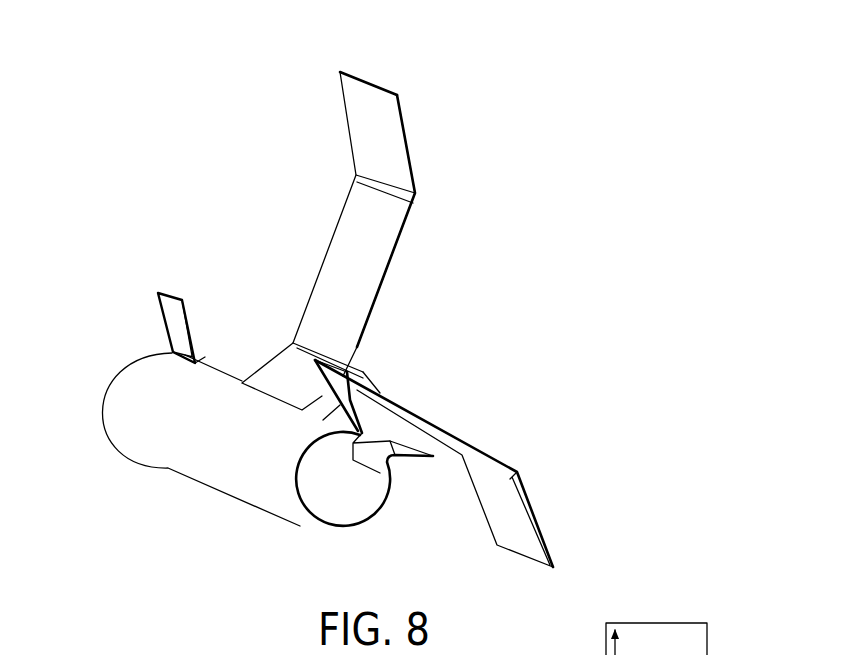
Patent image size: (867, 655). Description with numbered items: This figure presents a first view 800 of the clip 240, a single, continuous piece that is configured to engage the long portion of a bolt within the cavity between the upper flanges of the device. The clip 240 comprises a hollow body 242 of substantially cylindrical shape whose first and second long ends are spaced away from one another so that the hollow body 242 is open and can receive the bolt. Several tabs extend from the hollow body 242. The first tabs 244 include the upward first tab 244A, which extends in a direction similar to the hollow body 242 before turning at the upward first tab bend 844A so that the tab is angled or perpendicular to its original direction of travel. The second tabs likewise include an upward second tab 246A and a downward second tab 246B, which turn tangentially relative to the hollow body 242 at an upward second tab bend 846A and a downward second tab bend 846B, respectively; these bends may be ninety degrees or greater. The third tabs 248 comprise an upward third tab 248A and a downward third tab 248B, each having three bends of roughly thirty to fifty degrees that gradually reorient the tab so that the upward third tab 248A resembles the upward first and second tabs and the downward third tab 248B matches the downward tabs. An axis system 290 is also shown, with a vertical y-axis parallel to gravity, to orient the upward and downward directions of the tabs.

The first view 800 is at (679, 54).
The clip 240 is at (585, 206).
The hollow body 242 is at (312, 533).
The first tabs 244 is at (125, 315).
The upward first tab 244A is at (168, 325).
The upward first tab bend 844A is at (197, 367).
The third tabs 248 is at (405, 314).
The upward third tab 248A is at (333, 237).
The downward third tab 248B is at (487, 455).
The upward second tab 246A is at (340, 405).
The downward second tab 246B is at (427, 457).
The upward second tab bend 846A is at (363, 430).
The downward second tab bend 846B is at (377, 448).
The axis system 290 is at (708, 643).